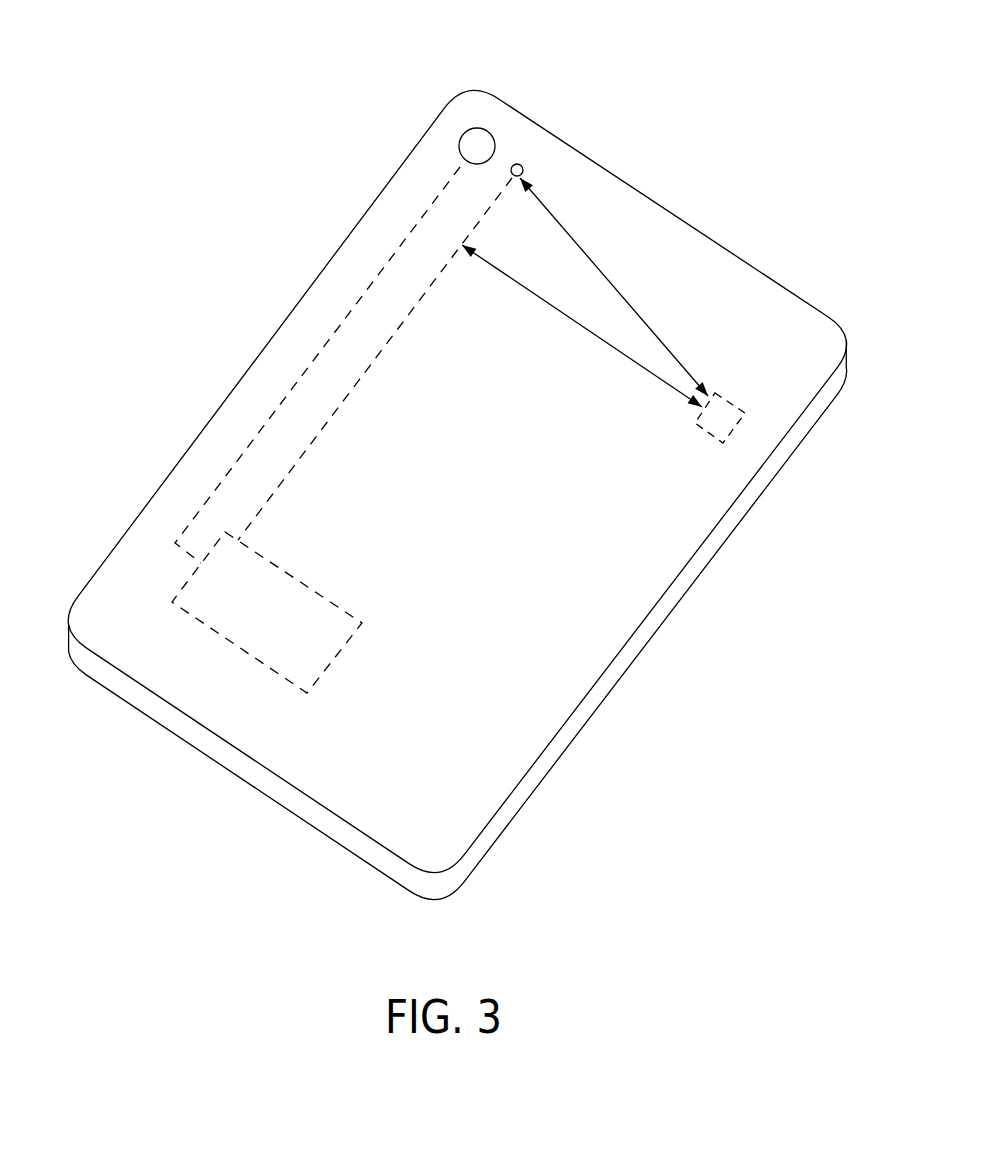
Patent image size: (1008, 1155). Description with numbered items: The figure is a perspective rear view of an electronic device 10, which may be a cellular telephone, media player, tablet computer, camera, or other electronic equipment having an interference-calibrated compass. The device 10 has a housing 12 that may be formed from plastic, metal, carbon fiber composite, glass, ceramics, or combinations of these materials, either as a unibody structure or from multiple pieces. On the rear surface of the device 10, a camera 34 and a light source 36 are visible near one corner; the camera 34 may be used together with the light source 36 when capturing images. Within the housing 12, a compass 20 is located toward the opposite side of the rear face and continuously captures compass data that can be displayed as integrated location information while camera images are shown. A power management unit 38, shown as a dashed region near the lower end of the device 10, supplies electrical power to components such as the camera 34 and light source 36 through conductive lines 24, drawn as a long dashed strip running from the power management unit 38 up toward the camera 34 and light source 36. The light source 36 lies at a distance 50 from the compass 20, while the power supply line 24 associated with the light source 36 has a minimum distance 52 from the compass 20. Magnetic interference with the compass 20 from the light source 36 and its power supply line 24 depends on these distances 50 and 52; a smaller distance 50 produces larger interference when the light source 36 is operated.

The electronic device 10 is at (745, 85).
The housing 12 is at (632, 650).
The compass 20 is at (725, 427).
The conductive lines 24 is at (407, 312).
The camera 34 is at (472, 145).
The light source 36 is at (520, 163).
The power management unit 38 is at (260, 630).
The distance 50 is at (603, 273).
The minimum distance 52 is at (598, 335).